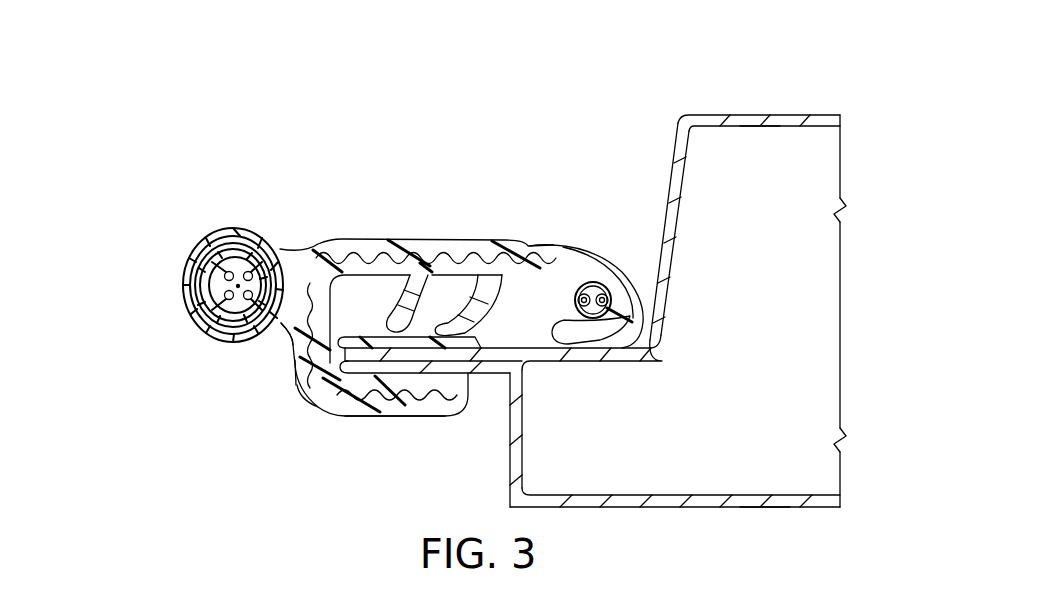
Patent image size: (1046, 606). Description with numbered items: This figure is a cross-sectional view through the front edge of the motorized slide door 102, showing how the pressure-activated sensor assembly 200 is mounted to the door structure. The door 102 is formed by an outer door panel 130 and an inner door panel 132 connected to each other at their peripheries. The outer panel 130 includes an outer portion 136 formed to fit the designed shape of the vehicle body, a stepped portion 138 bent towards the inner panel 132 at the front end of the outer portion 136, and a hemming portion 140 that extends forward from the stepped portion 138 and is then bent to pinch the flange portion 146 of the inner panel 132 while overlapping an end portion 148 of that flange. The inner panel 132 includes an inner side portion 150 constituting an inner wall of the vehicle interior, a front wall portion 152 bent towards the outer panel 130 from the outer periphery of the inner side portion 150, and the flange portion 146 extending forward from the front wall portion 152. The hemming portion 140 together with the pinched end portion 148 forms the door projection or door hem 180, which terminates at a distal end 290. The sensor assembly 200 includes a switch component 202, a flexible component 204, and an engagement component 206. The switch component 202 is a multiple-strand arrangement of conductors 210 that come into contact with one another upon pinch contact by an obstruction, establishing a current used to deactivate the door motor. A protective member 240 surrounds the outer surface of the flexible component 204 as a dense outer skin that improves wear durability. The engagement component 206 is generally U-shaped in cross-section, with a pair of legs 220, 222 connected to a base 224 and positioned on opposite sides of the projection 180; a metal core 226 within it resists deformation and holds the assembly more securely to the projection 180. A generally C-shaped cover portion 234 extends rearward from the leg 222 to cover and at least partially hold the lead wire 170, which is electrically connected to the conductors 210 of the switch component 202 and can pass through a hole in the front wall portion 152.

The motorized door 102 is at (650, 122).
The inner side portion 150 is at (795, 114).
The inner door panel 132 is at (756, 140).
The front wall portion 152 is at (672, 240).
The flange portion 146 is at (530, 362).
The stepped portion 138 is at (518, 440).
The outer door panel 130 is at (700, 485).
The outer portion 136 is at (772, 508).
The hemming portion 140 is at (483, 390).
The pressure-activated sensor assembly 200 is at (162, 344).
The switch component 202 is at (220, 333).
The flexible component 204 is at (184, 286).
The conductors 210 is at (198, 255).
The protective member 240 is at (232, 230).
The engagement component 206 is at (386, 224).
The metal core 226 is at (338, 240).
The door projection 180 is at (434, 308).
The leg 222 is at (490, 240).
The cover portion 234 is at (600, 256).
The lead wire 170 is at (576, 280).
The leg 220 is at (407, 418).
The end portion 148 is at (333, 400).
The distal end 290 is at (298, 394).
The base 224 is at (293, 343).